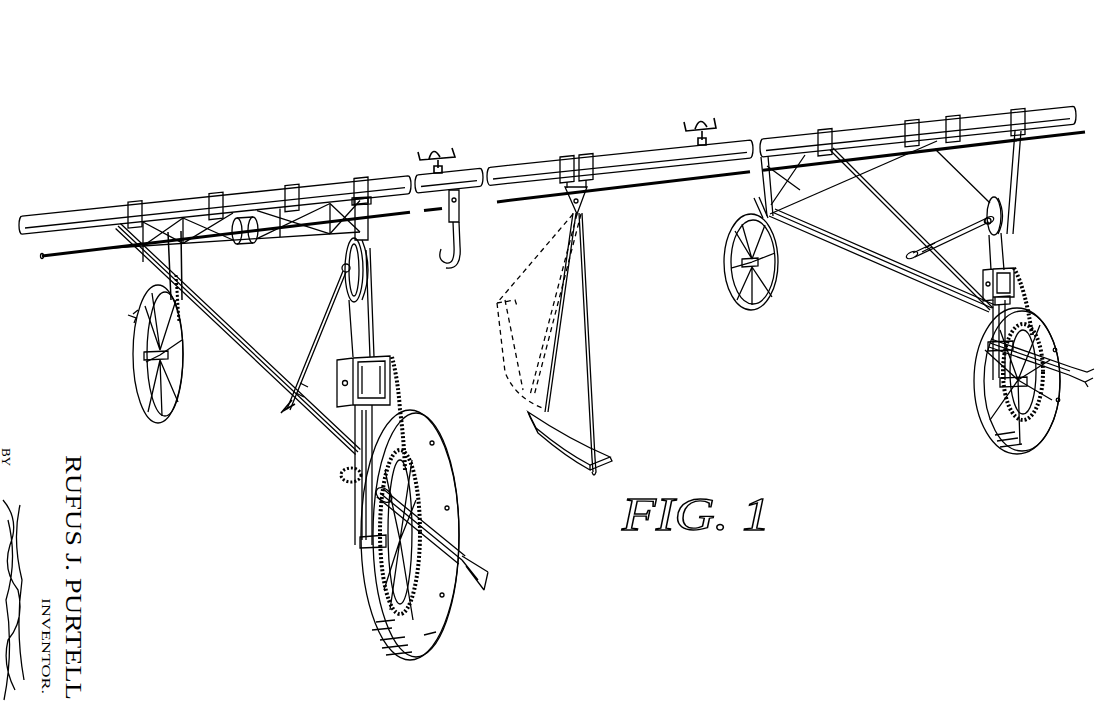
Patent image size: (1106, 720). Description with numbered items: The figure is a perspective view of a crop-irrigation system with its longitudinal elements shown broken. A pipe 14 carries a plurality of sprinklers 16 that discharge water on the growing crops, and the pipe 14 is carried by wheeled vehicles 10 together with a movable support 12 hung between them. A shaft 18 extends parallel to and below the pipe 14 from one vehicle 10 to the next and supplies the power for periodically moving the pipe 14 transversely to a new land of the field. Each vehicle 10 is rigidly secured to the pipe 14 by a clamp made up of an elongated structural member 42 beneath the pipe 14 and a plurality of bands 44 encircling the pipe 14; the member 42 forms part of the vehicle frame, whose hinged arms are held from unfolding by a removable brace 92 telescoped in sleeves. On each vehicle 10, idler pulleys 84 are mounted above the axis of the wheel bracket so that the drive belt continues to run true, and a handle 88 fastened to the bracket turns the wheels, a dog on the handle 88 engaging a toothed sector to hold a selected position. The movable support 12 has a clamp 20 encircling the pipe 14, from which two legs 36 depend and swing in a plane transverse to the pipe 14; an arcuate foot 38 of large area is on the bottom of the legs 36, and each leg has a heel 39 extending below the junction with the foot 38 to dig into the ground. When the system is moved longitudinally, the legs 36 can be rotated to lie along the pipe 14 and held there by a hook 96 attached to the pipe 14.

The vehicle 10 is at (412, 381).
The movable support 12 is at (602, 362).
The pipe 14 is at (642, 150).
The sprinkler 16 is at (441, 150).
The shaft 18 is at (634, 186).
The clamp 20 is at (573, 154).
The leg 36 is at (588, 324).
The arcuate foot 38 is at (558, 453).
The heel 39 is at (602, 470).
The elongated structural member 42 is at (110, 239).
The band 44 is at (138, 202).
The idler pulley 84 is at (343, 263).
The handle 88 is at (490, 576).
The brace 92 is at (886, 268).
The hook 96 is at (455, 262).